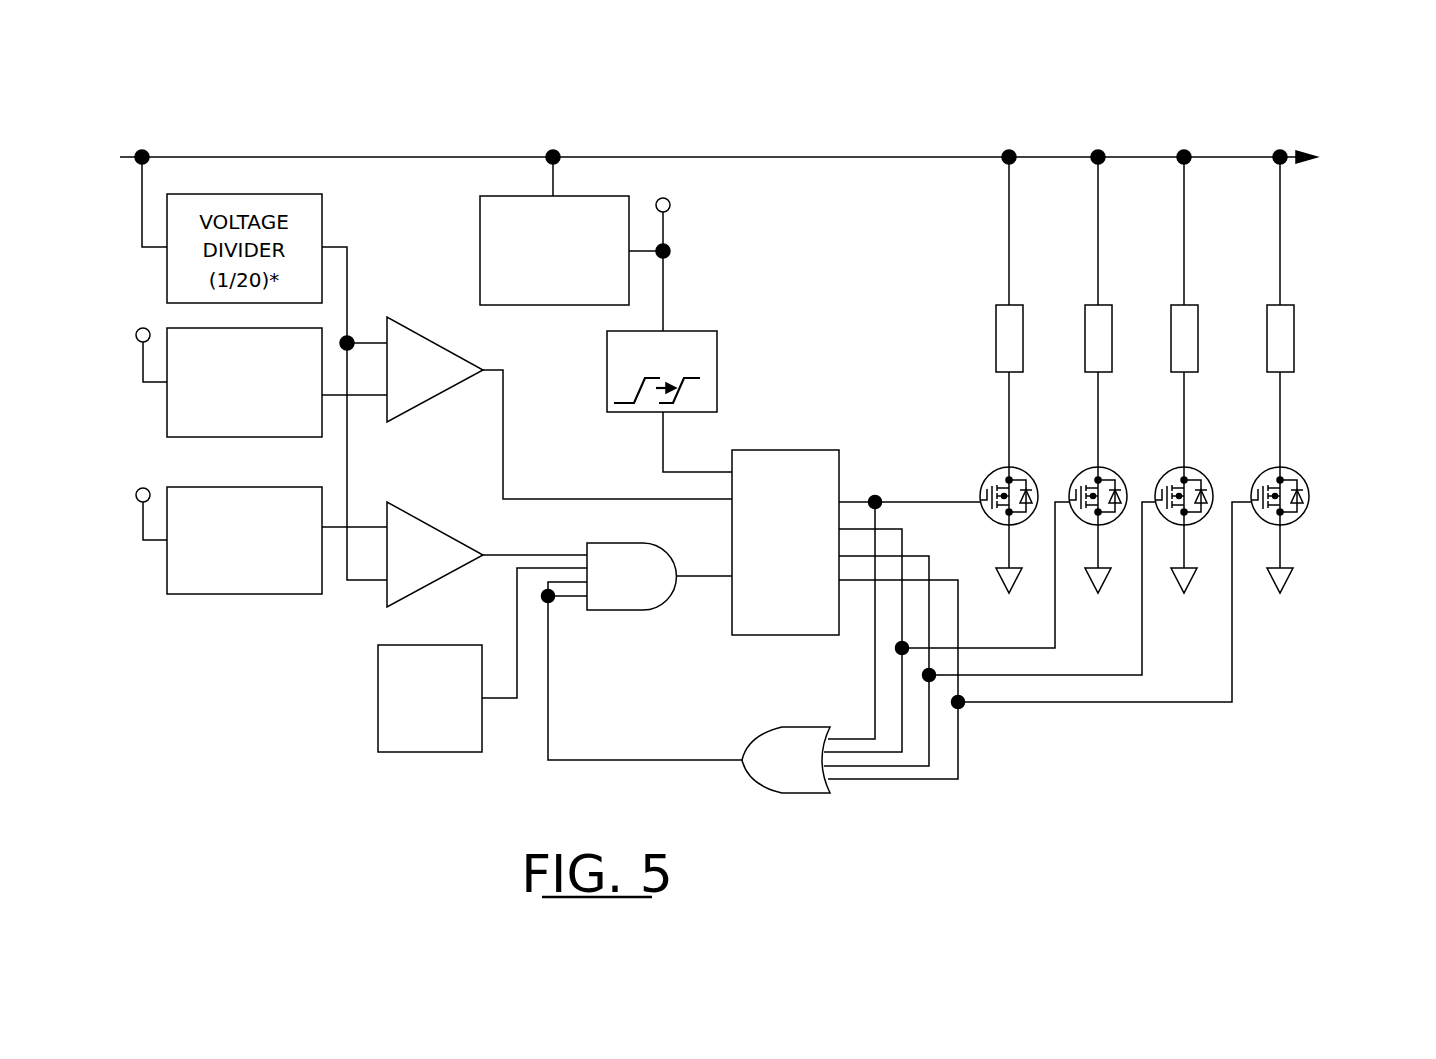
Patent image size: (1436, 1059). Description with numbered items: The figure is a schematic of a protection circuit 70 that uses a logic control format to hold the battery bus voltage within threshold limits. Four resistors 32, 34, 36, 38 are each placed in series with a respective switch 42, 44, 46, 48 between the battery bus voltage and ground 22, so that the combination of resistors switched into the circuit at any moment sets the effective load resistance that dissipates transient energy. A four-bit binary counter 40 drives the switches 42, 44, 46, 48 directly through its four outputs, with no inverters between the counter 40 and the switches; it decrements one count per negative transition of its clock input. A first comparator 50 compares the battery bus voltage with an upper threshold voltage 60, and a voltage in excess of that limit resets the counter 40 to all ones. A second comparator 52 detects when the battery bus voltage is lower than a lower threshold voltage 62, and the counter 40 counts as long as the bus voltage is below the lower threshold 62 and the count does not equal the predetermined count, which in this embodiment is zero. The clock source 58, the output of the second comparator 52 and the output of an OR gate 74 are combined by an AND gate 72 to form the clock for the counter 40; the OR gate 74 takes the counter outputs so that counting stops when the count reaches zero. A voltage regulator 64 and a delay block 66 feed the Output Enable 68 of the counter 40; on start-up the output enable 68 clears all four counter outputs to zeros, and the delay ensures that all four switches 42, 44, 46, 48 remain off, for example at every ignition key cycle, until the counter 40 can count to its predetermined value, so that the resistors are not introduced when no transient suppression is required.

The protection circuit 70 is at (1085, 125).
The voltage regulator 64 is at (478, 233).
The delay block 66 is at (717, 357).
The Output Enable 68 is at (816, 519).
The counter 40 is at (841, 463).
The first comparator 50 is at (417, 332).
The second comparator 52 is at (412, 508).
The upper threshold voltage 60 is at (167, 423).
The lower threshold voltage 62 is at (167, 586).
The clock source 58 is at (430, 752).
The AND gate 72 is at (630, 610).
The OR gate 74 is at (795, 727).
The resistor 32 is at (997, 309).
The resistor 34 is at (1086, 309).
The resistor 36 is at (1172, 309).
The resistor 38 is at (1268, 309).
The switch 42 is at (1018, 466).
The switch 44 is at (1107, 466).
The switch 46 is at (1193, 466).
The switch 48 is at (1289, 466).
The ground 22 is at (1002, 588).